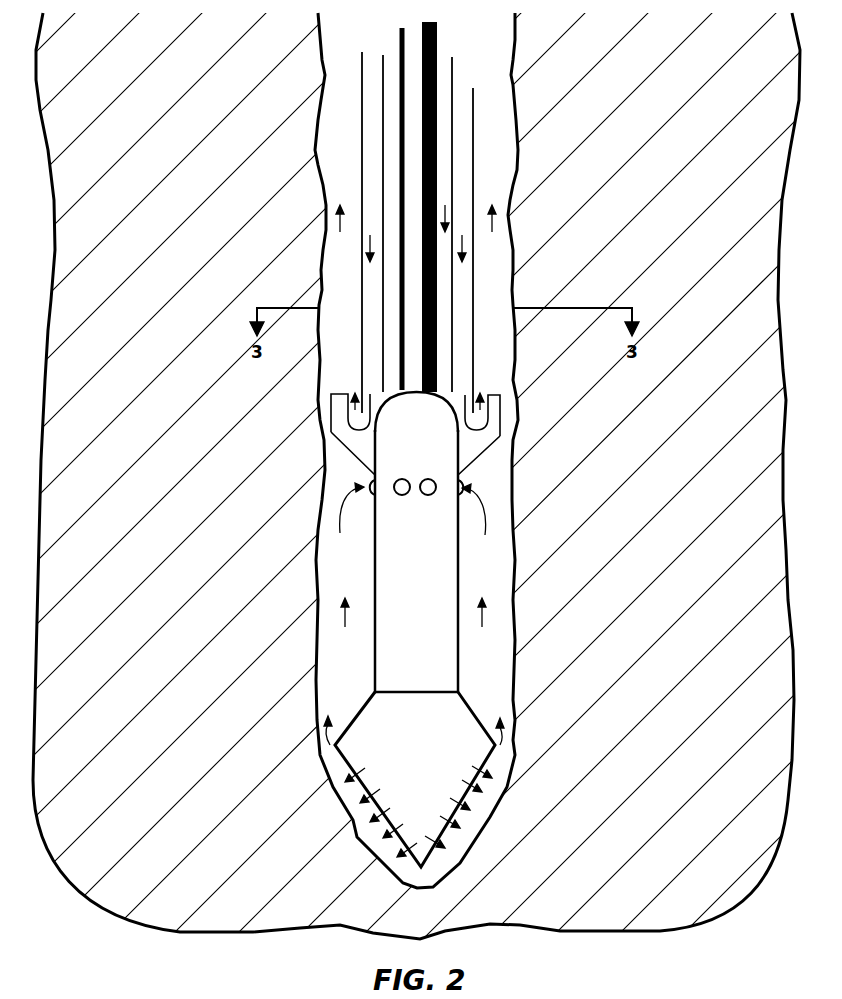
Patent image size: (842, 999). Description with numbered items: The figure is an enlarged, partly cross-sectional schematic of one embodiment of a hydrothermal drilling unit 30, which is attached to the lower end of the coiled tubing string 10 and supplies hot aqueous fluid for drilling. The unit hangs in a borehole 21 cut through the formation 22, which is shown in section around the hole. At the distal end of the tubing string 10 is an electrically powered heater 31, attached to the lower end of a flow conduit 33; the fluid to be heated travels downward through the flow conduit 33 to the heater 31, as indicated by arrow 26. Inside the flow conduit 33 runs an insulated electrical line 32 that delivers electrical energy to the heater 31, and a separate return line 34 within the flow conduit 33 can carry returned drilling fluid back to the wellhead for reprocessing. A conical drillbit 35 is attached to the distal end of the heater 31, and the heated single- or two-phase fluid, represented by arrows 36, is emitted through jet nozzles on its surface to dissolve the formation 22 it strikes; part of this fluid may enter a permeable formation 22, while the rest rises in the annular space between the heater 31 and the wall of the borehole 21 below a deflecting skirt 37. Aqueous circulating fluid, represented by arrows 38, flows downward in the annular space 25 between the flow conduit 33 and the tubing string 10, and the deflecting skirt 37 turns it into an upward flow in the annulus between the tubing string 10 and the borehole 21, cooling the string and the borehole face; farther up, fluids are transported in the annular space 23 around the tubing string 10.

The tubing string 10 is at (488, 112).
The borehole 21 is at (510, 188).
The formation 22 is at (668, 586).
The annular space 23 is at (500, 343).
The annular space 25 is at (467, 381).
The arrow 26 is at (447, 216).
The hydrothermal drilling unit 30 is at (493, 709).
The heater 31 is at (460, 543).
The insulated electrical line 32 is at (399, 43).
The flow conduit 33 is at (455, 73).
The return line 34 is at (440, 41).
The conical drillbit 35 is at (468, 798).
The arrows 36 is at (388, 788).
The deflecting skirt 37 is at (487, 440).
The arrows 38 is at (467, 247).